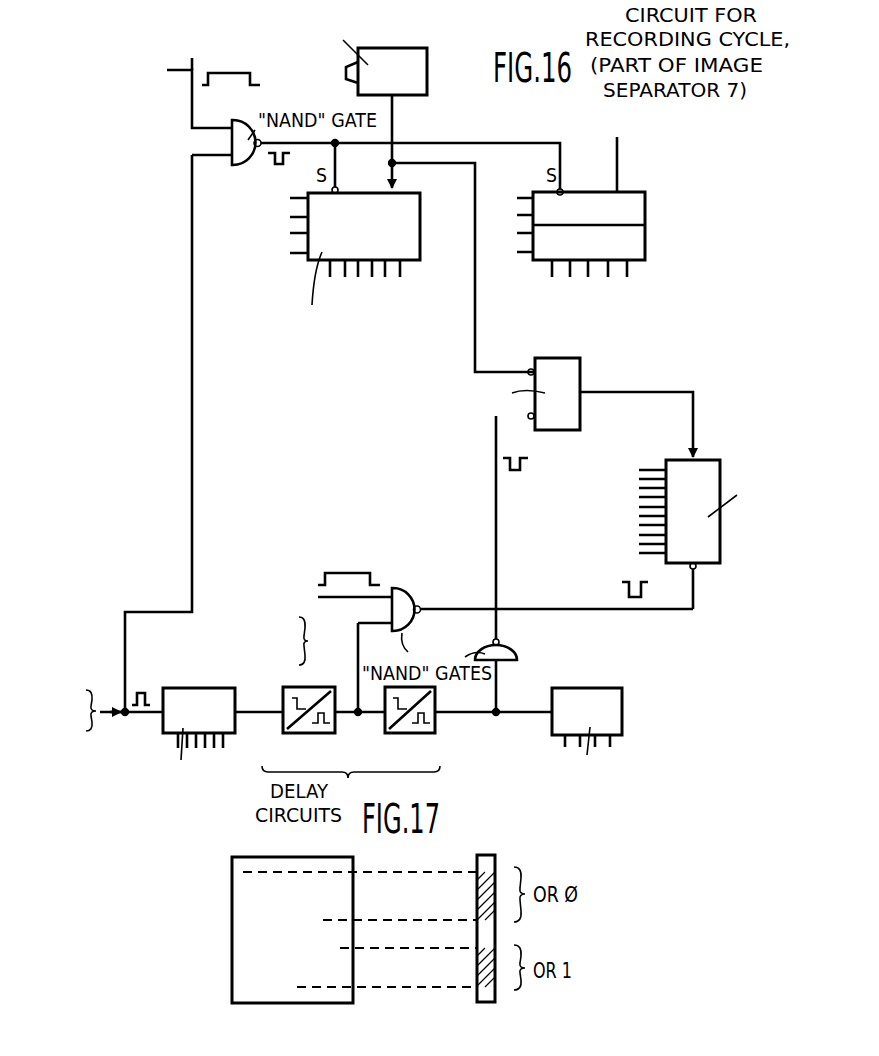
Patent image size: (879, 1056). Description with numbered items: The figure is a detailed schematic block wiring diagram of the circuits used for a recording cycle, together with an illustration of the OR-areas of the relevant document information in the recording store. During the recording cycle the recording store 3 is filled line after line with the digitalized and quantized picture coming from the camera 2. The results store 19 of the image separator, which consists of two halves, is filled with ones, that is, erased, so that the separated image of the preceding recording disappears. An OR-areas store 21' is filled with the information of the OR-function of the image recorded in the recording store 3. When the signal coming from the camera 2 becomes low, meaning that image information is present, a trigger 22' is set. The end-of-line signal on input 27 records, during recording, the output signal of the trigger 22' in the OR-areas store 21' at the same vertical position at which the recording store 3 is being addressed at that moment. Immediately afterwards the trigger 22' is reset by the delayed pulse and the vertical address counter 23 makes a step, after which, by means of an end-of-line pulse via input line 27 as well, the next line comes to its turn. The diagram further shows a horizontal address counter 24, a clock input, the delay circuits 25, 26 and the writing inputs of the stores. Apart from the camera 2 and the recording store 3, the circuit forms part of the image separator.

In FIG. 16, the camera 2 is at (407, 75).
In FIG. 16, the recording store 3 is at (397, 218).
In FIG. 17, the recording store 3 is at (242, 863).
In FIG. 16, the results store 19 is at (632, 210).
In FIG. 16, the OR-areas store 21' is at (715, 508).
In FIG. 16, the trigger 22' is at (562, 387).
In FIG. 16, the vertical address counter 23 is at (610, 710).
In FIG. 16, the horizontal address counter 24 is at (175, 718).
In FIG. 16, the delay circuit 25 is at (300, 735).
In FIG. 16, the delay circuit 26 is at (400, 735).
In FIG. 16, the end of line input 27 is at (356, 637).